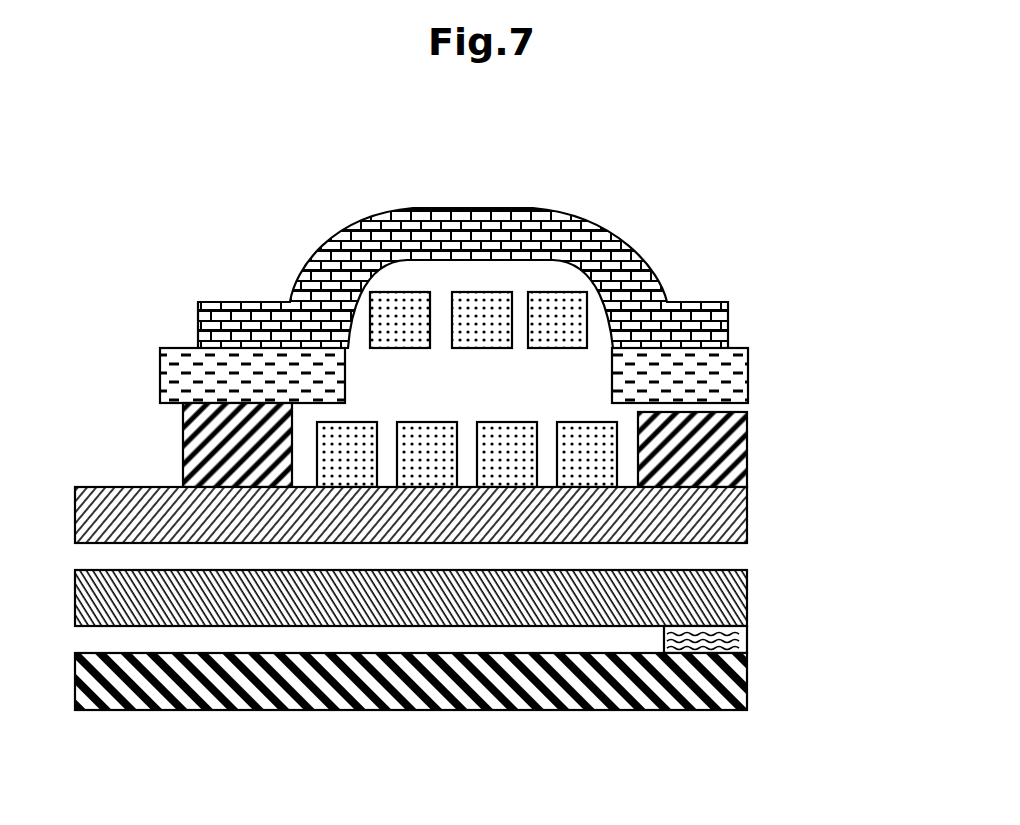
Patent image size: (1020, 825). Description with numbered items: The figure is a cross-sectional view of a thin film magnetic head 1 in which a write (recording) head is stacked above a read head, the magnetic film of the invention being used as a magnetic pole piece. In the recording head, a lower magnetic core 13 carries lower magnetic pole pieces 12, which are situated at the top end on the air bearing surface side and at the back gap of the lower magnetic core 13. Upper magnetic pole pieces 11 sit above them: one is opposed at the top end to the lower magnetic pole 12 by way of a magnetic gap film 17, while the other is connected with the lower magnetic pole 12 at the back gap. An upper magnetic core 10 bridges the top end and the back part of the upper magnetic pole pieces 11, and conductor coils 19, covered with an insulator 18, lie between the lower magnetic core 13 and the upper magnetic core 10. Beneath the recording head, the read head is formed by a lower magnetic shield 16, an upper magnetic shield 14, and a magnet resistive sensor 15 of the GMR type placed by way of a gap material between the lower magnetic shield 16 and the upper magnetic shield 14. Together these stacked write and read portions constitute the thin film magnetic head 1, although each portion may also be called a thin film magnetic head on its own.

The thin film magnetic head 1 is at (775, 162).
The upper magnetic core 10 is at (697, 335).
The upper magnetic pole pieces 11 is at (737, 388).
The lower magnetic pole pieces 12 is at (733, 450).
The lower magnetic core 13 is at (737, 515).
The upper magnetic shield 14 is at (737, 597).
The magnet resistive sensor 15 is at (740, 642).
The lower magnetic shield 16 is at (737, 697).
The magnetic gap film 17 is at (750, 411).
The insulator 18 is at (547, 272).
The conductor coils 19 is at (568, 323).